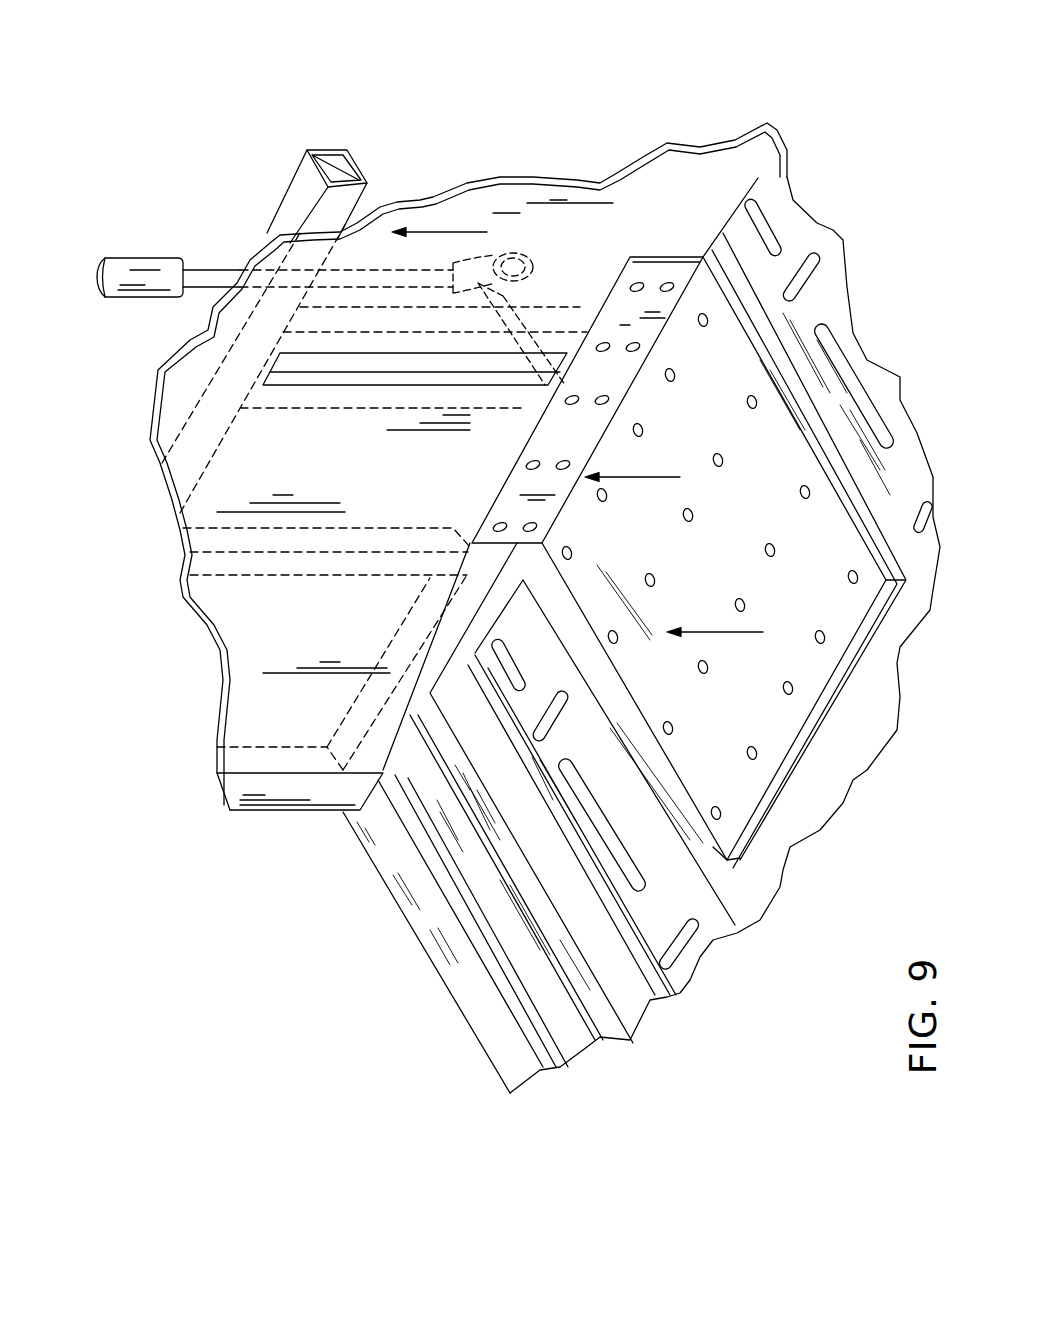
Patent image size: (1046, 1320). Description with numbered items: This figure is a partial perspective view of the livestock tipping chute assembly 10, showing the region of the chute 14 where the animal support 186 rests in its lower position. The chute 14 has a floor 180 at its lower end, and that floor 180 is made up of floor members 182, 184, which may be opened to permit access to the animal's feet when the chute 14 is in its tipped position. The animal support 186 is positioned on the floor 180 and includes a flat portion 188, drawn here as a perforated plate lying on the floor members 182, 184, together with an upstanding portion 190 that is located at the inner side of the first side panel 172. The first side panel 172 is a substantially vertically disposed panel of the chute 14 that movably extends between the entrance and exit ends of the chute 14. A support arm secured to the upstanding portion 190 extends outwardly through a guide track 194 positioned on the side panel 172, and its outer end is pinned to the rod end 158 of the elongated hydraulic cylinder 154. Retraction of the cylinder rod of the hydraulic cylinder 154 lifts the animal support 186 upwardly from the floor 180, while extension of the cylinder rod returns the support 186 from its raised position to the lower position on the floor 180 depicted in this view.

The livestock tipping chute assembly 10 is at (131, 526).
The chute 14 is at (195, 657).
The hydraulic cylinder 154 is at (205, 238).
The rod end 158 is at (497, 243).
The first side panel 172 is at (432, 205).
The floor 180 is at (445, 870).
The floor member 182 is at (673, 870).
The floor member 184 is at (797, 813).
The animal support 186 is at (728, 348).
The flat portion 188 is at (745, 527).
The upstanding portion 190 is at (653, 273).
The guide track 194 is at (310, 370).